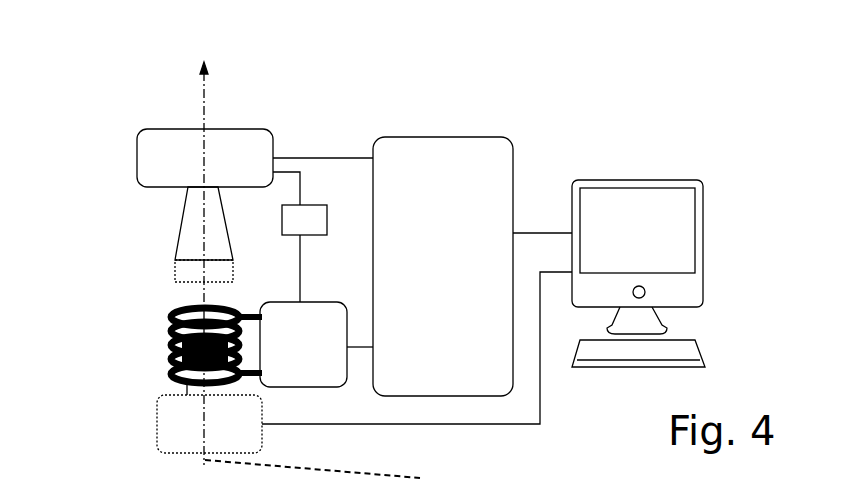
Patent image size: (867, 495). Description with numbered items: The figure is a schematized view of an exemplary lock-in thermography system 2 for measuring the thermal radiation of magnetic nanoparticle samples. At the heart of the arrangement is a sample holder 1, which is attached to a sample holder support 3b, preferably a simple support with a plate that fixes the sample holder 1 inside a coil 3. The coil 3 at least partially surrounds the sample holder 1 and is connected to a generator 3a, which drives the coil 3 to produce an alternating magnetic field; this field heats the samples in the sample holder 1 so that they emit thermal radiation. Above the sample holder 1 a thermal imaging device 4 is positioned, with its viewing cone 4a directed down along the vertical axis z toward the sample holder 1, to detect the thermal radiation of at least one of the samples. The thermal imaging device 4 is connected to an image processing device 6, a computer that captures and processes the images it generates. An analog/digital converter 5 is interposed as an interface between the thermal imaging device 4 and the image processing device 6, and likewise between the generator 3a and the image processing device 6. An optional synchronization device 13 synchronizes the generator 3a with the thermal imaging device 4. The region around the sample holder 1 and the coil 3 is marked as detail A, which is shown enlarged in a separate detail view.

The sample holder 1 is at (173, 365).
The lock-in thermography system 2 is at (113, 0).
The coil 3 is at (172, 312).
The generator 3a is at (325, 342).
The sample holder support 3b is at (195, 420).
The thermal imaging device 4 is at (235, 147).
The beam 4a is at (193, 223).
The analog/digital converter 5 is at (443, 157).
The image processing device 6 is at (616, 213).
The synchronization device 13 is at (306, 220).
The detail A is at (137, 340).
The z axis z is at (211, 263).